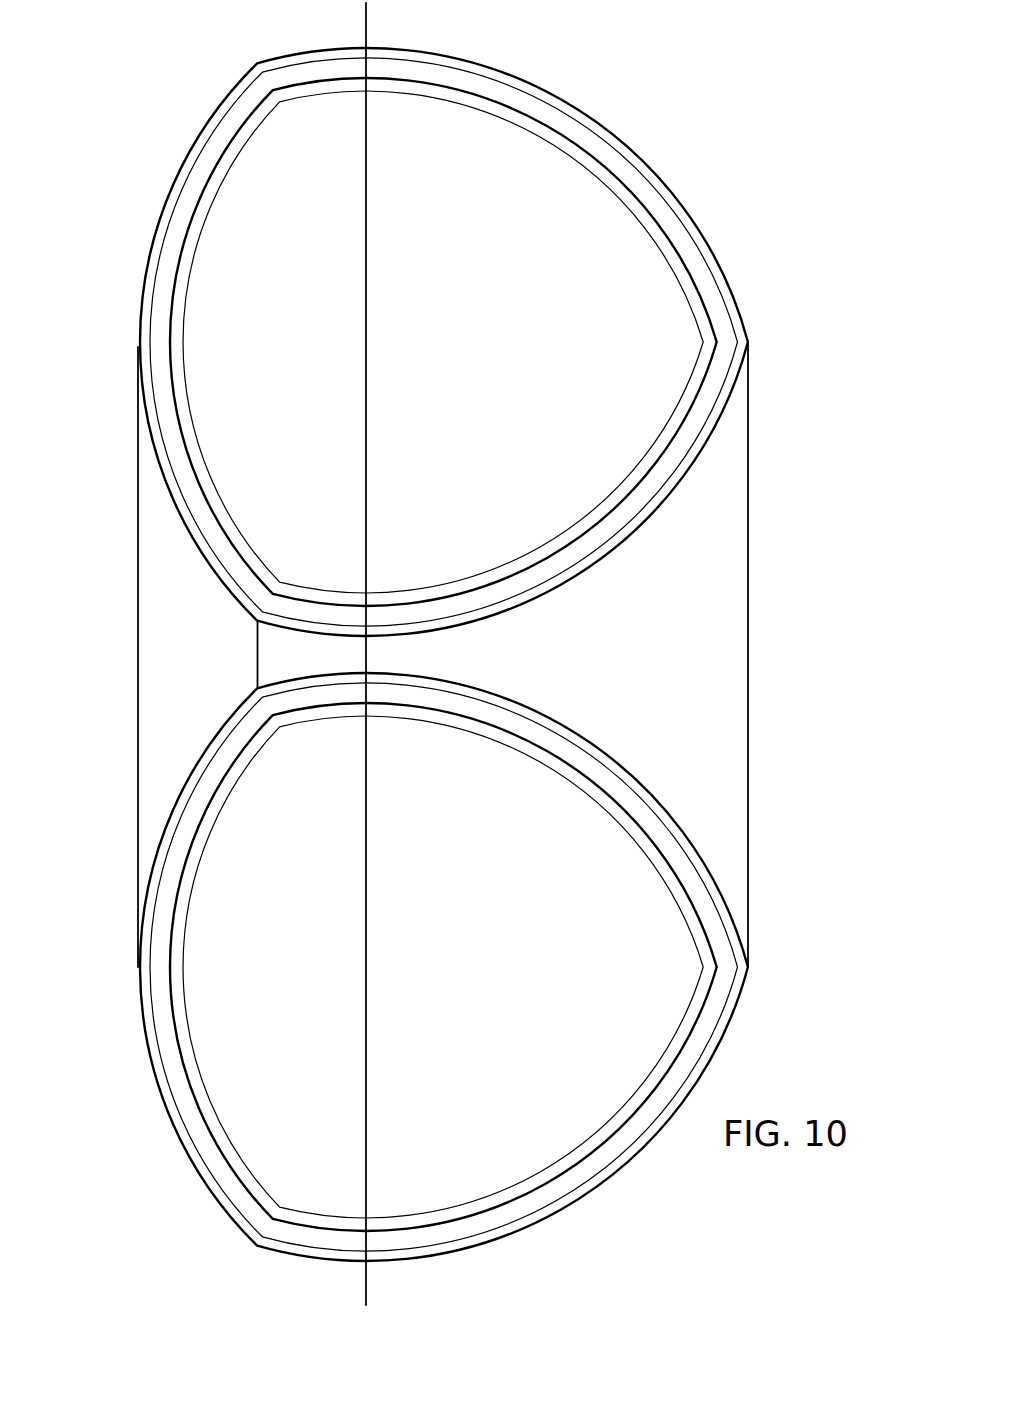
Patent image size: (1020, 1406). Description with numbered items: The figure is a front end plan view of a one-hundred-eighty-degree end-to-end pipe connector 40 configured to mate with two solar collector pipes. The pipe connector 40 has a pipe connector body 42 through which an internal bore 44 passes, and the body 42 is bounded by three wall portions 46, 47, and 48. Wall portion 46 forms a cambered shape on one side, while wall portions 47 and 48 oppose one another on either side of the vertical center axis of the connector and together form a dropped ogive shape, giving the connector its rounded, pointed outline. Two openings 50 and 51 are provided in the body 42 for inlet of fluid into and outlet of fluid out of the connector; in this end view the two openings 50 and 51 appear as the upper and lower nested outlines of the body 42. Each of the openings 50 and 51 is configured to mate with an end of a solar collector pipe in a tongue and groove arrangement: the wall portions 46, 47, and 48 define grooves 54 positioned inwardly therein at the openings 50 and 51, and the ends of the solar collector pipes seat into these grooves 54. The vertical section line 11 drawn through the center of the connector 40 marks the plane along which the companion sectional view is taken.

The section line 11- 11 is at (425, 26).
The pipe connector 40 is at (163, 1147).
The pipe connector body 42 is at (167, 612).
The internal bore 44 is at (456, 972).
The wall portion 46 is at (138, 953).
The wall portion 47 is at (577, 1195).
The wall portion 48 is at (507, 700).
The opening 50 is at (652, 1013).
The opening 51 is at (653, 407).
The grooves 54 is at (228, 133).